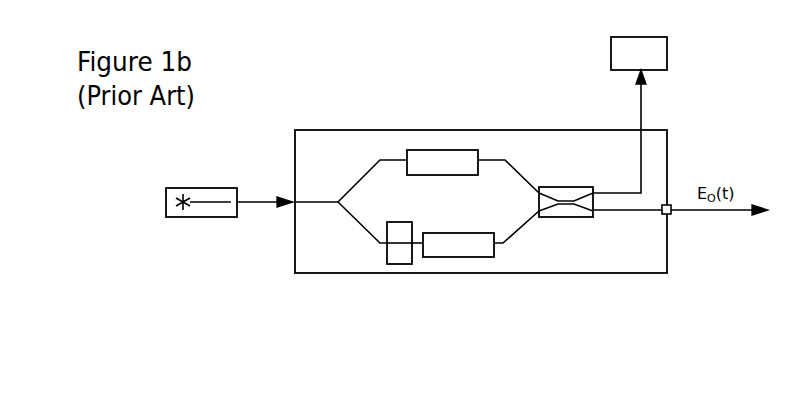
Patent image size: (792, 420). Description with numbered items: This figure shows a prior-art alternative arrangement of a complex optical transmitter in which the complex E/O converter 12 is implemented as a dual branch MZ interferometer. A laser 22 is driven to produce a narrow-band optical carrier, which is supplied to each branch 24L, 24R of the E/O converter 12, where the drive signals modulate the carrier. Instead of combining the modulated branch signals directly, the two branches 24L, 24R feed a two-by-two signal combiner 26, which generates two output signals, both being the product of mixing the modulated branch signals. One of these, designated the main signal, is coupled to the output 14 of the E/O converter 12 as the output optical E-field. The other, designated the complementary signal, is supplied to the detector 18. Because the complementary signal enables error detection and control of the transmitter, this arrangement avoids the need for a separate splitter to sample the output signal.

The complex E/O converter 12 is at (521, 130).
The complex E/O converter output 14 is at (668, 215).
The detector 18 is at (660, 37).
The laser 22 is at (197, 188).
The branch 24L is at (373, 156).
The branch 24R is at (373, 244).
The 2×2 signal combiner 26 is at (557, 187).